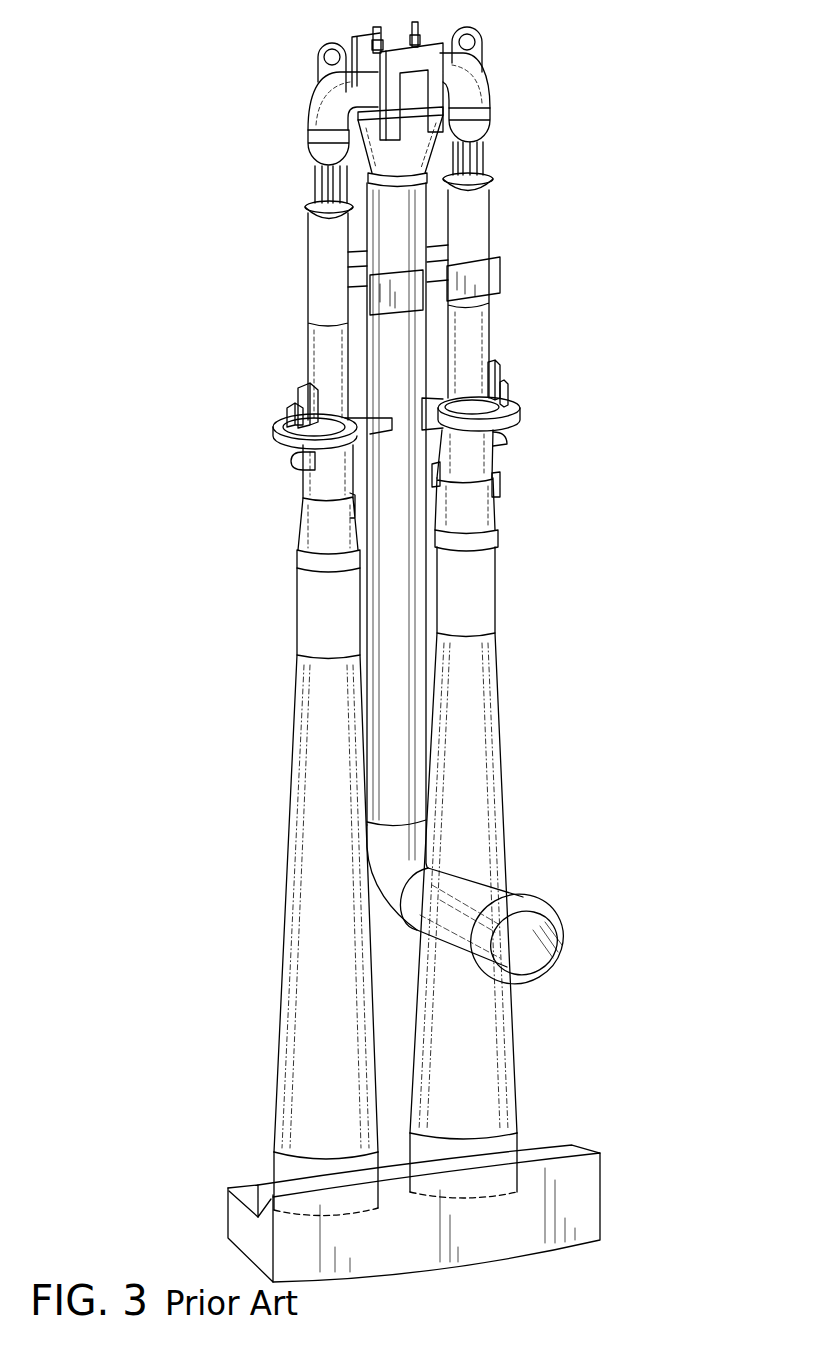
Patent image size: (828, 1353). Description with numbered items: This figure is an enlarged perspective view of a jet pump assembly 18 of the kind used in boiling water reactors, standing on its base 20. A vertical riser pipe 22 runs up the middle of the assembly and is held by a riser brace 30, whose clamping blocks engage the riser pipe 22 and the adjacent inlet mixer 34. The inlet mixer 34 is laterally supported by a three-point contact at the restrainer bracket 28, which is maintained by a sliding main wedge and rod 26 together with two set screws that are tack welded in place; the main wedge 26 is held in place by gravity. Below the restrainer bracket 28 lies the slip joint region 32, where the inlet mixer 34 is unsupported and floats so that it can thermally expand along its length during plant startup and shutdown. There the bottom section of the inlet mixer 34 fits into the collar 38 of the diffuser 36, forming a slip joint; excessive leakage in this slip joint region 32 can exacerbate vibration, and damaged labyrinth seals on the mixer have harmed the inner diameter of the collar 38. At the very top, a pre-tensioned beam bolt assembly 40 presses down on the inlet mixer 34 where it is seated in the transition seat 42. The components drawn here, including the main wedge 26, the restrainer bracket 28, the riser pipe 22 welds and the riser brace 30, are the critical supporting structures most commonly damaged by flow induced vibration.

The jet pump assembly 18 is at (558, 717).
The base 20 is at (585, 1200).
The riser pipe 22 is at (400, 595).
The main wedge and rod 26 is at (288, 413).
The restrainer bracket 28 is at (277, 439).
The riser brace 30 is at (353, 262).
The slip joint region 32 is at (307, 485).
The inlet mixer 34 is at (483, 337).
The diffuser 36 is at (292, 933).
The collar 38 is at (485, 515).
The beam bolt assembly 40 is at (367, 35).
The transition seat 42 is at (405, 150).